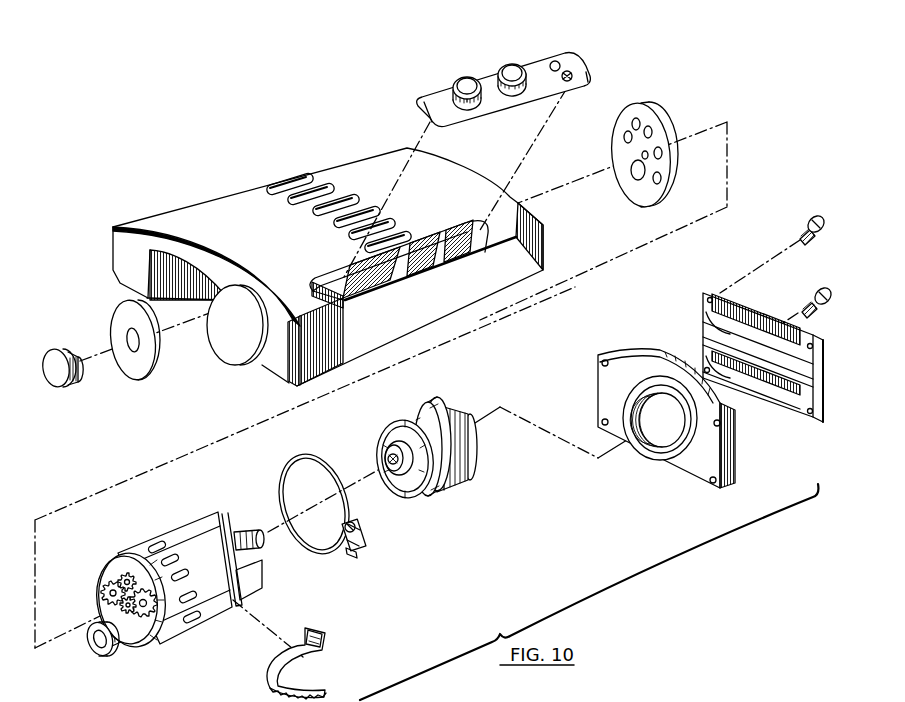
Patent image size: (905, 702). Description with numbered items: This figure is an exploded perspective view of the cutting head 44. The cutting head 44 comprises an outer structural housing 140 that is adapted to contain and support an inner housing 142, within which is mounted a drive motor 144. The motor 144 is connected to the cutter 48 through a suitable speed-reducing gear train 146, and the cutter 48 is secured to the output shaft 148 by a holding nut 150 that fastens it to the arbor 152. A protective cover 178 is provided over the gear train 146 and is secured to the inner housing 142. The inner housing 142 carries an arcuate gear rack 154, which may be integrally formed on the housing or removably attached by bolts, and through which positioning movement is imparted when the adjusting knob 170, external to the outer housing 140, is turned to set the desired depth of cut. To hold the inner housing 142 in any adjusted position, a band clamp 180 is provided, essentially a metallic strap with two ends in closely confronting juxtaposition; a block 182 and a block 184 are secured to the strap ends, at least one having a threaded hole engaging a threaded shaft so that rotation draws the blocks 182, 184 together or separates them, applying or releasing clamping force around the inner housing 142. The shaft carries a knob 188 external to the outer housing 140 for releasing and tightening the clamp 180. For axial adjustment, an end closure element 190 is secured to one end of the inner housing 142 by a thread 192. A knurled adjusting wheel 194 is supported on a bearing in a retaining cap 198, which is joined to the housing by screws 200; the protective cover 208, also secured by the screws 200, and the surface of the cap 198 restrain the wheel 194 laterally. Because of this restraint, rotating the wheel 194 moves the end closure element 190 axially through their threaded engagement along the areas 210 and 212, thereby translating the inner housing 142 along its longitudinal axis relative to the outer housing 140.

The cutting head 44 is at (153, 213).
The outer structural housing 140 is at (232, 200).
The cutter 48 is at (143, 363).
The holding nut 150 is at (48, 380).
The adjusting knob 170 is at (470, 86).
The knob 188 is at (513, 75).
The protective cover 178 is at (645, 107).
The screws 200 is at (808, 223).
The protective cover 208 is at (768, 402).
The knurled adjusting wheel 194 is at (667, 352).
The retaining cap 198 is at (603, 393).
The threaded engagement area 212 is at (657, 455).
The end closure element 190 is at (430, 410).
The thread 192 is at (393, 422).
The threaded engagement area 210 is at (470, 450).
The band clamp 180 is at (286, 458).
The block 184 is at (366, 530).
The block 182 is at (350, 548).
The inner housing 142 is at (172, 530).
The drive motor 144 is at (262, 540).
The output shaft 148 is at (135, 640).
The gear train 146 is at (110, 575).
The arbor 152 is at (103, 655).
The arcuate gear rack 154 is at (322, 644).